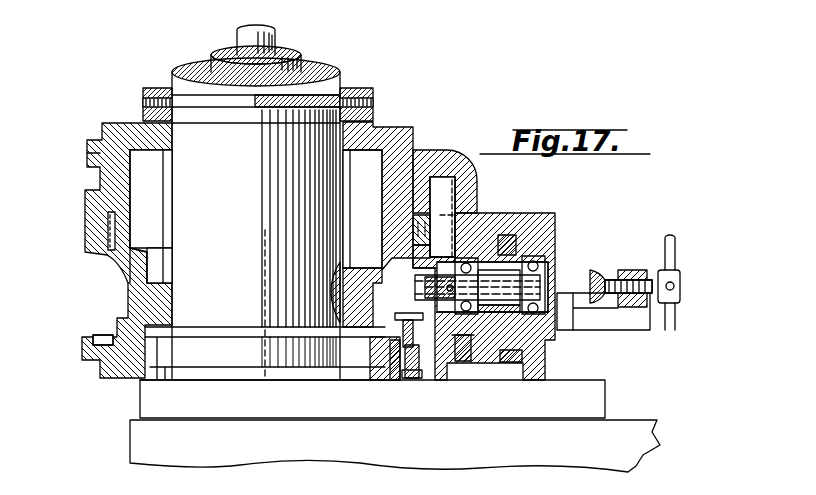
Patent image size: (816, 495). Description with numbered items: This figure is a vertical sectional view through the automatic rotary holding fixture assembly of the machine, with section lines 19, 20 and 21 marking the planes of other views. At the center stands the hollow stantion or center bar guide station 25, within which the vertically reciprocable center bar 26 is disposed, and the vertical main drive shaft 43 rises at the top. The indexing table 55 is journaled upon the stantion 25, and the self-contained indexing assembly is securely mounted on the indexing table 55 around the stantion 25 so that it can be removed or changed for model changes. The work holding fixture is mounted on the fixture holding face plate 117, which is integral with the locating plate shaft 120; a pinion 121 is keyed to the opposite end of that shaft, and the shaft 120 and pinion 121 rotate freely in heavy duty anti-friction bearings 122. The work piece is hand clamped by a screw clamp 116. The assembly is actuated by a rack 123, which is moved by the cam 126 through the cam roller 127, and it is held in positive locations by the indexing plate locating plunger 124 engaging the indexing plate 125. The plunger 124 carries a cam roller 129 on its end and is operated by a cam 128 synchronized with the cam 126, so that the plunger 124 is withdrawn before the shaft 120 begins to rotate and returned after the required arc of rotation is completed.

The vertical main drive shaft 43 is at (238, 32).
The center bar 26 is at (300, 60).
The center bar guide station 25 is at (350, 76).
The cam 126 is at (97, 207).
The cam roller 127 is at (413, 220).
The rack 123 is at (472, 192).
The anti-friction bearings 122 is at (473, 257).
The locating plate shaft 120 is at (510, 218).
The indexing plate 125 is at (520, 222).
The fixture holding face plate 117 is at (550, 252).
The screw clamp 116 is at (608, 280).
The indexing plate locating plunger 124 is at (470, 362).
The pinion 121 is at (424, 297).
The cam 128 is at (82, 347).
The cam roller 129 is at (405, 372).
The indexing table 55 is at (607, 392).
The section line 19- 19 is at (688, 240).
The section line 20- 20 is at (403, 167).
The section line 21- 21 is at (345, 352).